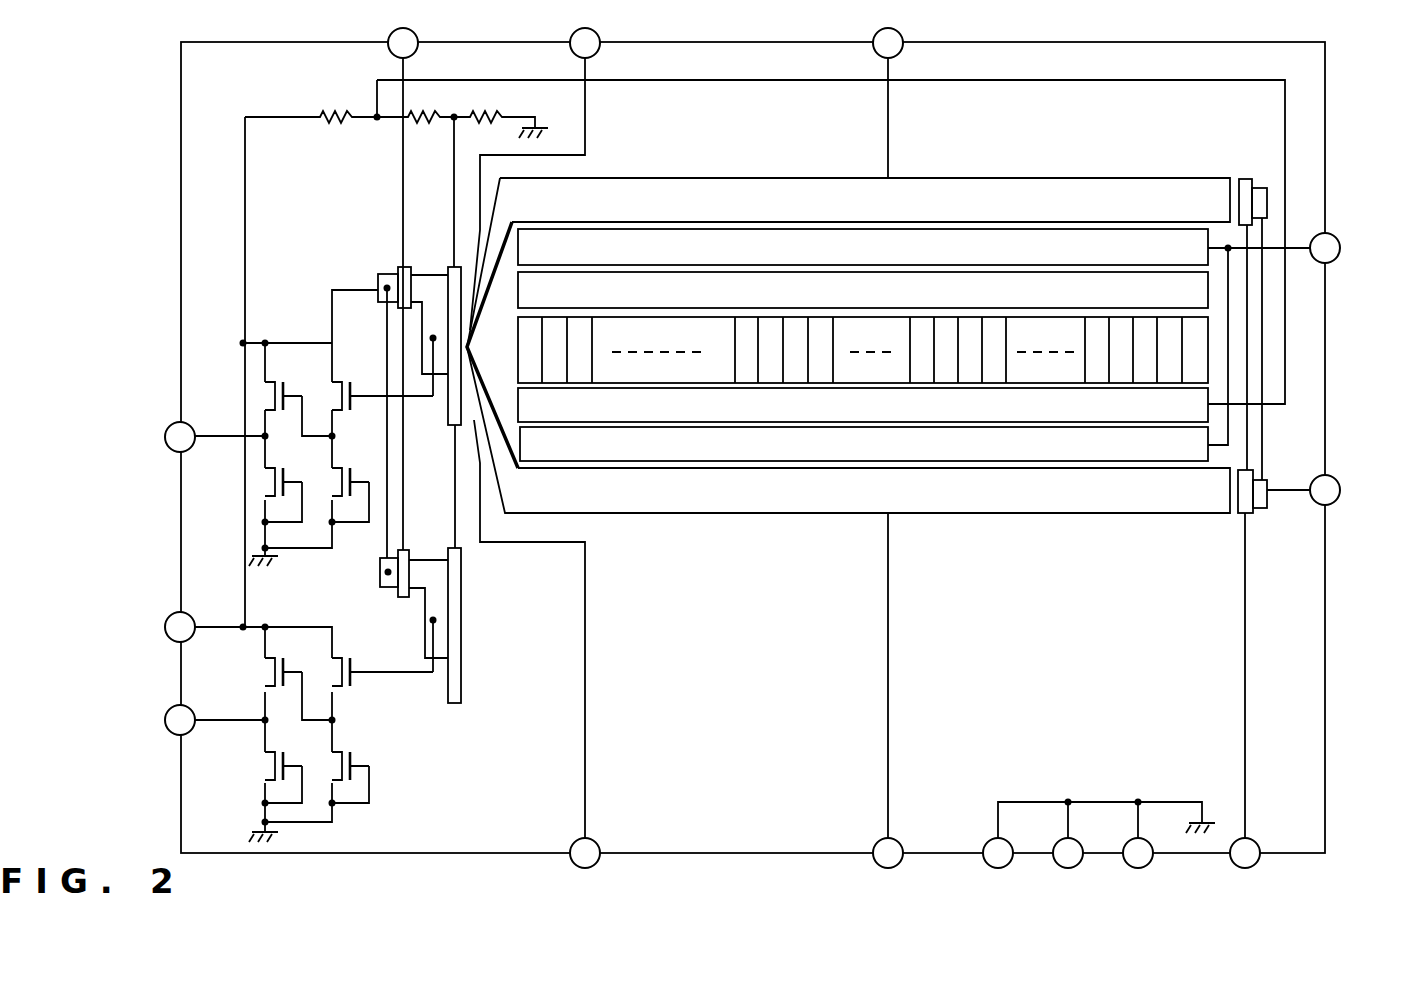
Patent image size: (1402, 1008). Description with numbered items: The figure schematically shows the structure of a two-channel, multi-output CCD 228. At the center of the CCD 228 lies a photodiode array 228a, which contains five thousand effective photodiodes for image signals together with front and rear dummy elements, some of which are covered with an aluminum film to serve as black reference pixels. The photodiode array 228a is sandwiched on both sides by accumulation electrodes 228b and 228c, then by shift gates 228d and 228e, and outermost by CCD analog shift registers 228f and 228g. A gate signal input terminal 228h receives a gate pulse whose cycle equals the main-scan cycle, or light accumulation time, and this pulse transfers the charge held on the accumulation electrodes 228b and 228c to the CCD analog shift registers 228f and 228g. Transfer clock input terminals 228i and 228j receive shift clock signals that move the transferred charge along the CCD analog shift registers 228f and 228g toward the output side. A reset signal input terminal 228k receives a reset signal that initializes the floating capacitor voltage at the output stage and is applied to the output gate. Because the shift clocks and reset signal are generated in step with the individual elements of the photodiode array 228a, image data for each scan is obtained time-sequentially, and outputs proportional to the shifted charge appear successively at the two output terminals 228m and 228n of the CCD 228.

The multi-output CCD 228 is at (181, 133).
The photodiode array 228a is at (1053, 373).
The accumulation electrode 228b is at (620, 290).
The accumulation electrode 228c is at (1167, 413).
The shift gate 228d is at (1157, 247).
The shift gate 228e is at (630, 450).
The CCD analog shift register 228f is at (1077, 198).
The CCD analog shift register 228g is at (738, 516).
The input terminal of a gate signal 228h is at (1328, 233).
The input terminal of a transfer clock signal 228i is at (876, 68).
The input terminal of a transfer clock signal 228j is at (880, 841).
The reset signal input terminal 228k is at (396, 52).
The output terminal 228m is at (170, 424).
The output terminal 228n is at (173, 707).